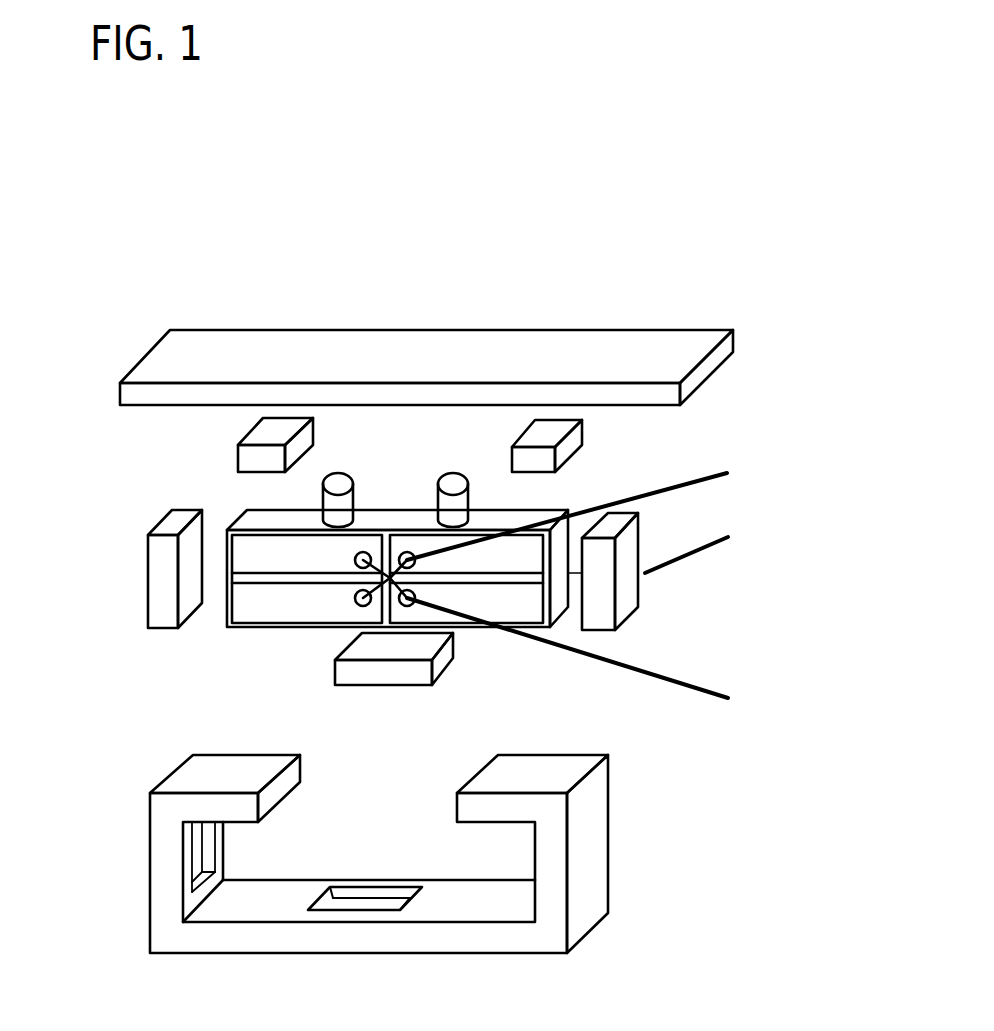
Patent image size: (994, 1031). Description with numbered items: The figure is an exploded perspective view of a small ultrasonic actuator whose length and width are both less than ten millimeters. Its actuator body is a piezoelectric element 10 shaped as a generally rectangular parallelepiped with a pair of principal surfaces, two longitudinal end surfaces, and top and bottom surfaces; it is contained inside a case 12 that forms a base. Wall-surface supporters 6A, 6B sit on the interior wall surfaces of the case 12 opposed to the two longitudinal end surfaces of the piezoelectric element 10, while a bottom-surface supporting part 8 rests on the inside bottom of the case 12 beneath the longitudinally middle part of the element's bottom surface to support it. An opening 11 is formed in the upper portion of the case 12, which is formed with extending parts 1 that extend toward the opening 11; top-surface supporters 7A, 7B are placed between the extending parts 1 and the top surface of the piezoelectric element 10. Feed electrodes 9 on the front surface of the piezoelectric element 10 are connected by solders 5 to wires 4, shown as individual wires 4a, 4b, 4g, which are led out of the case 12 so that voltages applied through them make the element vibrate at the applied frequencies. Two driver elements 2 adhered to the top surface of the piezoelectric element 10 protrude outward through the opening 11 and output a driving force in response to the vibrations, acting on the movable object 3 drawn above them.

The extending parts 1 is at (429, 877).
The driver elements 2 is at (340, 476).
The movable object 3 is at (625, 355).
The wires 4 is at (648, 585).
The wire 4a is at (717, 480).
The wire 4b is at (618, 648).
The wire 4g is at (717, 542).
The solders 5 is at (390, 578).
The wall-surface supporter 6A is at (627, 592).
The wall-surface supporter 6B is at (160, 573).
The top-surface supporter 7A is at (568, 447).
The top-surface supporter 7B is at (263, 457).
The bottom-surface supporting part 8 is at (380, 667).
The feed electrodes 9 is at (303, 548).
The piezoelectric element 10 is at (302, 574).
The opening 11 is at (432, 808).
The case 12 is at (587, 865).